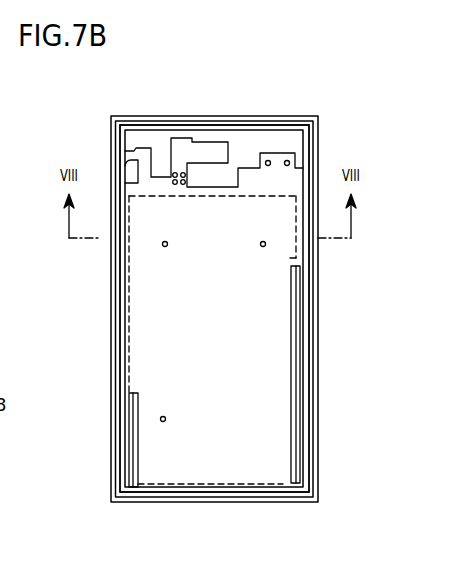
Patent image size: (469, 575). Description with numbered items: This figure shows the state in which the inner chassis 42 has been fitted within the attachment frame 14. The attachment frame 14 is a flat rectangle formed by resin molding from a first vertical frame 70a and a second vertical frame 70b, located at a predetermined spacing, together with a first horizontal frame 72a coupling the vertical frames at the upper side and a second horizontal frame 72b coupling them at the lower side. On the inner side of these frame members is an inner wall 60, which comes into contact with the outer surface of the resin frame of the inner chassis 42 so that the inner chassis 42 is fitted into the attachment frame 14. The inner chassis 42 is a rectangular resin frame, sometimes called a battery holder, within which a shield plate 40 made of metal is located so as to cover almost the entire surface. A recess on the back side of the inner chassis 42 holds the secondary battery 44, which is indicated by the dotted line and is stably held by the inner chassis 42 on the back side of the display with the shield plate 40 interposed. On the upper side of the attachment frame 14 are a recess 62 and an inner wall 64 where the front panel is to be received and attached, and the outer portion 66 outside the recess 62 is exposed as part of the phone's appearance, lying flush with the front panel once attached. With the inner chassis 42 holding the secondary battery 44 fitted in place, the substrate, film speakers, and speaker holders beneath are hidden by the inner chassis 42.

The attachment frame 14 is at (143, 100).
The shield plate 40 is at (143, 171).
The inner chassis 42 is at (305, 335).
The secondary battery 44 is at (305, 268).
The inner wall 60 is at (128, 312).
The recess 62 is at (310, 433).
The inner wall 64 is at (130, 345).
The outer portion 66 is at (313, 453).
The first vertical frame 70a is at (113, 342).
The second vertical frame 70b is at (312, 383).
The first horizontal frame 72a is at (244, 119).
The second horizontal frame 72b is at (232, 498).